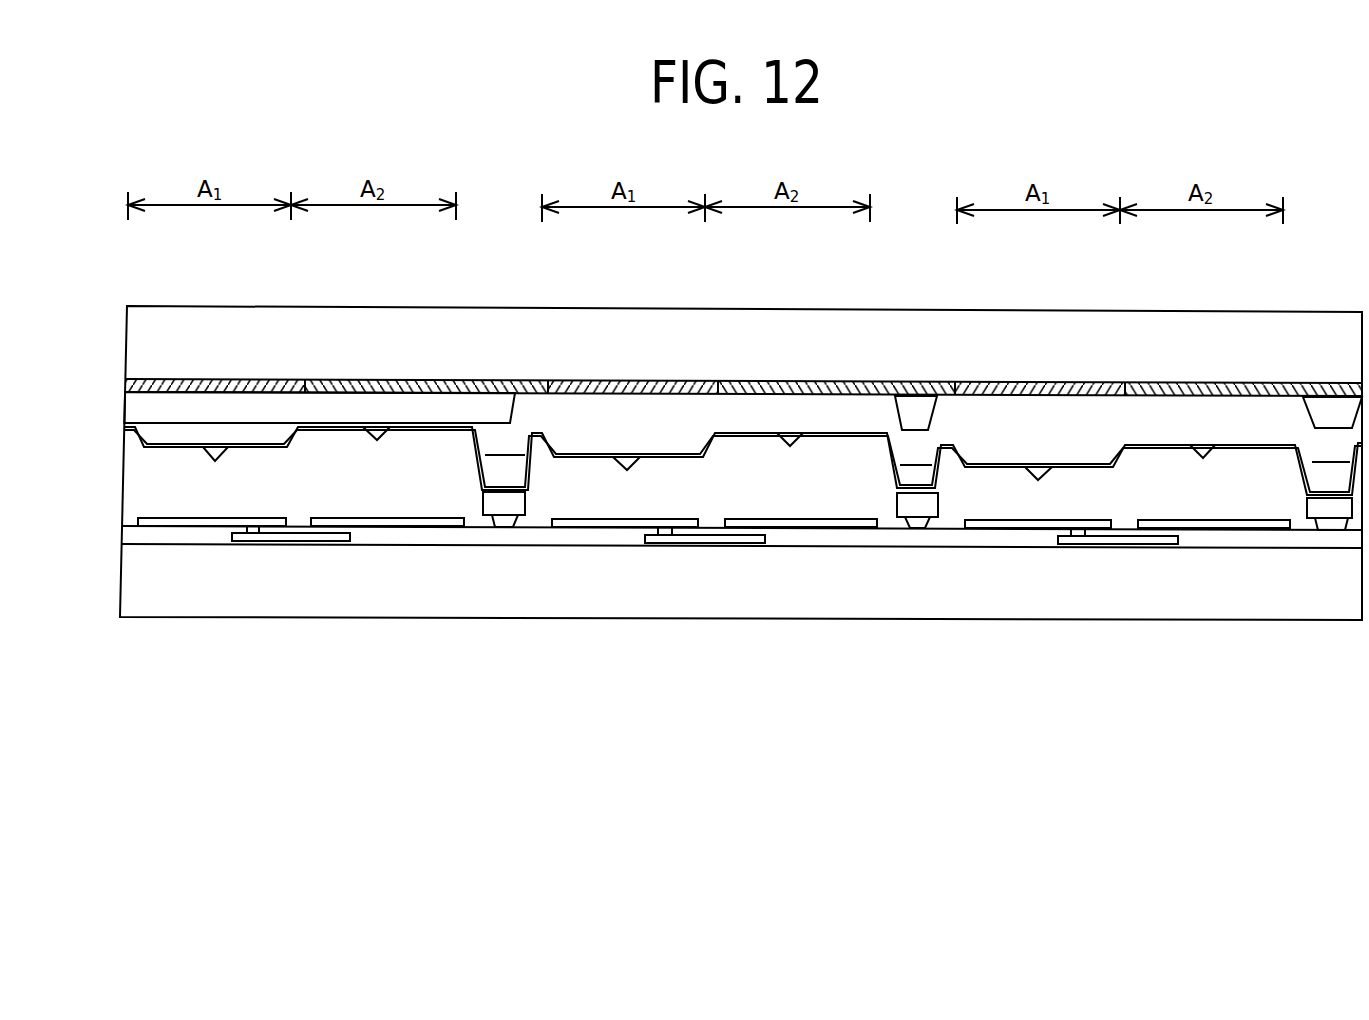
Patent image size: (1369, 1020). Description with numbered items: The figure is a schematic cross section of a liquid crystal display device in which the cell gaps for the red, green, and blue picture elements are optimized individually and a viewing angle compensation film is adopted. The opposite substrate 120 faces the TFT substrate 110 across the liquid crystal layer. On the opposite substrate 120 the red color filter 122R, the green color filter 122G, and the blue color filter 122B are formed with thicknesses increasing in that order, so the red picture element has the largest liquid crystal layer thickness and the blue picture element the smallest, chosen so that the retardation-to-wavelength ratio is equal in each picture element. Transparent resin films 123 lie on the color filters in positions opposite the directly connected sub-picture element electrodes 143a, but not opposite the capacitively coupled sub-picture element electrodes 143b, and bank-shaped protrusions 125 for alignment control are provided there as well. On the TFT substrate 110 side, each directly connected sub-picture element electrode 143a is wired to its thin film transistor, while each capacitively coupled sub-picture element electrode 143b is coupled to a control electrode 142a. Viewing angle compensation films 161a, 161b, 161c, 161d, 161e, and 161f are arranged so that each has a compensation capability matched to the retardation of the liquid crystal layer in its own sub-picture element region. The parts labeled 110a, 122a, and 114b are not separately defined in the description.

The opposite substrate 120 is at (117, 307).
The TFT substrate 110 is at (117, 522).
The lower base substrate 110a is at (1316, 608).
The red color filter 122R is at (367, 402).
The green color filter 122G is at (828, 410).
The blue color filter 122B is at (1263, 410).
The color filter transmissive portion 122a is at (1033, 320).
The viewing angle compensation film 161a is at (187, 383).
The viewing angle compensation film 161b is at (472, 387).
The viewing angle compensation film 161c is at (687, 388).
The viewing angle compensation film 161d is at (929, 390).
The viewing angle compensation film 161e is at (1100, 391).
The viewing angle compensation film 161f is at (1318, 391).
The transparent resin film 123 is at (165, 437).
The bank-shaped protrusion 125 is at (220, 456).
The sub-picture element electrode directly connected to the TFT 143a is at (161, 527).
The sub-picture element electrode capacitively coupled to the control electrode 143b is at (408, 527).
The drain electrode 114b is at (263, 541).
The control electrode 142a is at (330, 541).